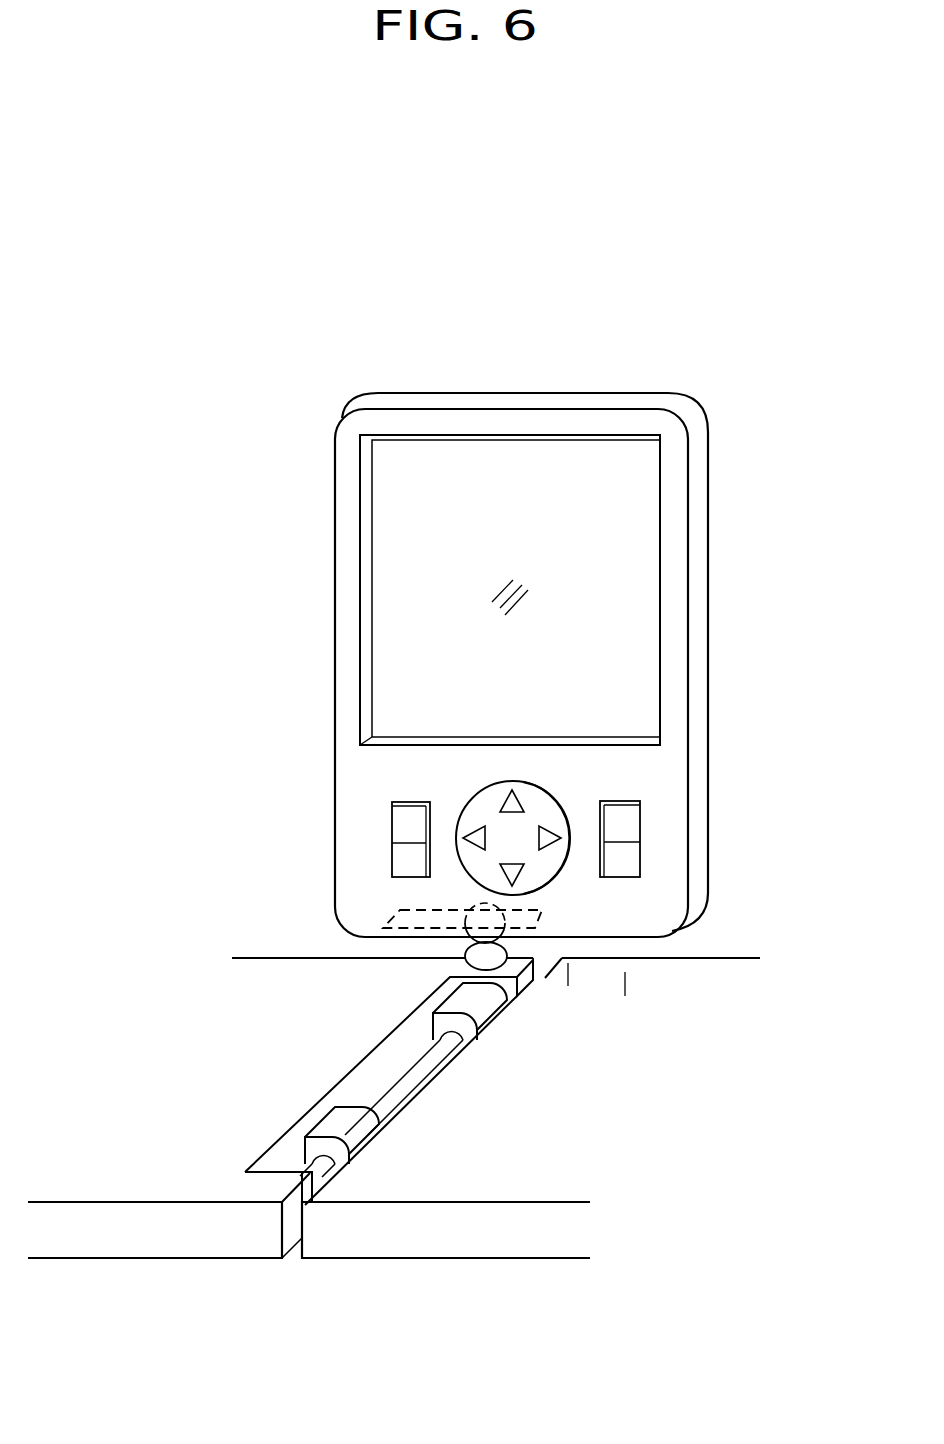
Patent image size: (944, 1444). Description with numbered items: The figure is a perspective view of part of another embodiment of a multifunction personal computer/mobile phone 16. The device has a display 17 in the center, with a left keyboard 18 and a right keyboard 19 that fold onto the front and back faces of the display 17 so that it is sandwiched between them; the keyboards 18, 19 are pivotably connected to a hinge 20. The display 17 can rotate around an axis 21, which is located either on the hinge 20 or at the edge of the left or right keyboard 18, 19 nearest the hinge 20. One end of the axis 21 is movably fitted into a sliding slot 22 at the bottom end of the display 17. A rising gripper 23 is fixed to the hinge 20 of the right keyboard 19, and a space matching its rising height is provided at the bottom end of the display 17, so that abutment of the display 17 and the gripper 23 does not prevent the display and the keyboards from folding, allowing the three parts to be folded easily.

The multifunction personal computer/mobile phone 16 is at (480, 1268).
The display 17 is at (514, 422).
The left keyboard 18 is at (145, 1245).
The right keyboard 19 is at (415, 1243).
The hinge 20 is at (425, 1063).
The axis 21 is at (478, 950).
The sliding slot 22 is at (500, 912).
The rising gripper 23 is at (470, 1010).